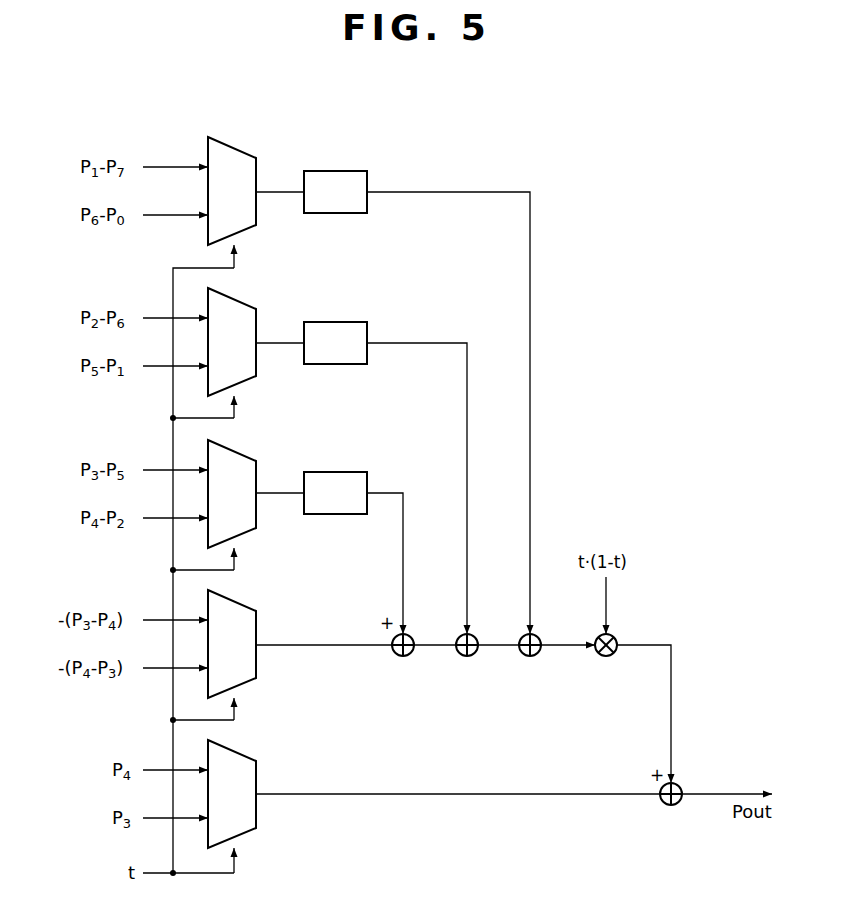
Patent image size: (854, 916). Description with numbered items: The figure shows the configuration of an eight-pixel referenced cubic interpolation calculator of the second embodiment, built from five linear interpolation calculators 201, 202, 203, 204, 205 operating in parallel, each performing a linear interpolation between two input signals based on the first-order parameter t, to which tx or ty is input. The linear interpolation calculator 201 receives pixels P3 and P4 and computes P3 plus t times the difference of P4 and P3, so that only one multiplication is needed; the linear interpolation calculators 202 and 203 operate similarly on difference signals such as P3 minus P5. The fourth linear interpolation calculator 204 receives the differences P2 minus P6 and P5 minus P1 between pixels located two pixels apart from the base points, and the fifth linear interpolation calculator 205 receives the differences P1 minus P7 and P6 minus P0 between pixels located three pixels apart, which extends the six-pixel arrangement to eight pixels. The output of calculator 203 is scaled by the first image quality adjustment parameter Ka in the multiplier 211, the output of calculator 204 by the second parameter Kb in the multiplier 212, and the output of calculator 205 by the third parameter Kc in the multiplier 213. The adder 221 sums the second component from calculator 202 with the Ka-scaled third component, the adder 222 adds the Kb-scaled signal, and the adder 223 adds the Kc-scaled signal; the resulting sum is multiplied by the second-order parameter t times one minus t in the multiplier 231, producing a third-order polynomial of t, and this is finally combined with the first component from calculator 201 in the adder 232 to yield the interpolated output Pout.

The linear interpolation calculator 201 is at (244, 755).
The linear interpolation calculator 202 is at (244, 605).
The linear interpolation calculator 203 is at (244, 455).
The fourth linear interpolation calculator 204 is at (244, 303).
The fifth linear interpolation calculator 205 is at (244, 152).
The multiplier 211 is at (352, 472).
The multiplier 212 is at (352, 322).
The multiplier 213 is at (352, 171).
The adder 221 is at (403, 656).
The adder 222 is at (467, 656).
The adder 223 is at (530, 656).
The multiplier 231 is at (614, 637).
The adder 232 is at (679, 786).